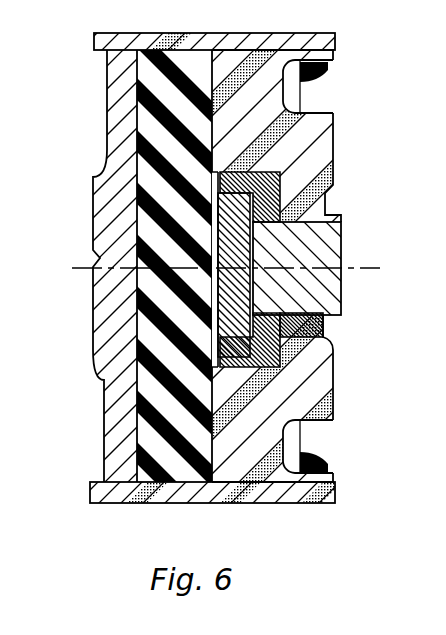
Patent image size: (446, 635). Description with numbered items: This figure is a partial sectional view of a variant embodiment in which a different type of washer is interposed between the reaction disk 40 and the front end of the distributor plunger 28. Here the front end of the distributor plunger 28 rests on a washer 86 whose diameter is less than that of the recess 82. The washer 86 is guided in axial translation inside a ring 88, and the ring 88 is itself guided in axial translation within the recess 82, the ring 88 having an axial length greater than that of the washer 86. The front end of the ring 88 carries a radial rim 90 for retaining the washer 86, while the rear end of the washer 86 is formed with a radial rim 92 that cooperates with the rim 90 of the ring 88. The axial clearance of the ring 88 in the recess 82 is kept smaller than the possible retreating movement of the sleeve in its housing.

The distributor plunger 28 is at (320, 233).
The reaction disk 40 is at (152, 383).
The recess 82 is at (130, 342).
The washer 86 is at (222, 288).
The ring 88 is at (218, 184).
The radial rim 90 is at (218, 212).
The radial rim 92 is at (323, 338).